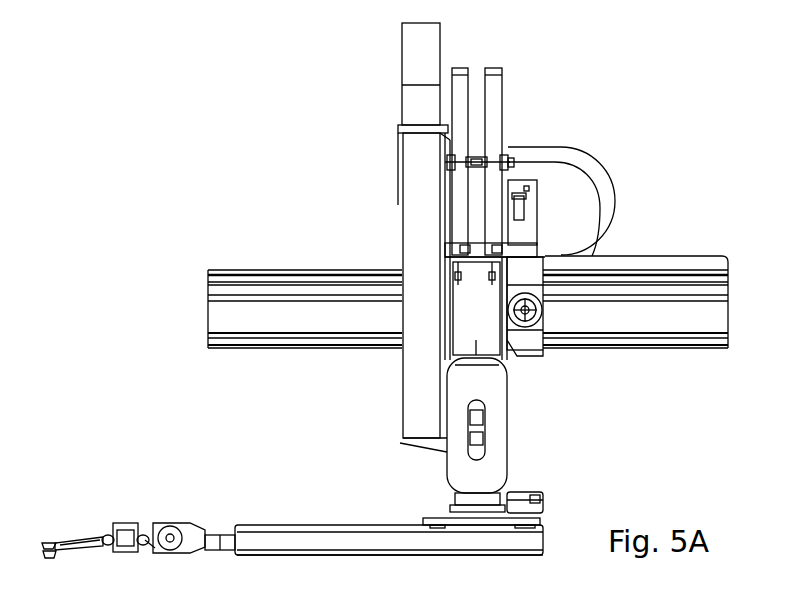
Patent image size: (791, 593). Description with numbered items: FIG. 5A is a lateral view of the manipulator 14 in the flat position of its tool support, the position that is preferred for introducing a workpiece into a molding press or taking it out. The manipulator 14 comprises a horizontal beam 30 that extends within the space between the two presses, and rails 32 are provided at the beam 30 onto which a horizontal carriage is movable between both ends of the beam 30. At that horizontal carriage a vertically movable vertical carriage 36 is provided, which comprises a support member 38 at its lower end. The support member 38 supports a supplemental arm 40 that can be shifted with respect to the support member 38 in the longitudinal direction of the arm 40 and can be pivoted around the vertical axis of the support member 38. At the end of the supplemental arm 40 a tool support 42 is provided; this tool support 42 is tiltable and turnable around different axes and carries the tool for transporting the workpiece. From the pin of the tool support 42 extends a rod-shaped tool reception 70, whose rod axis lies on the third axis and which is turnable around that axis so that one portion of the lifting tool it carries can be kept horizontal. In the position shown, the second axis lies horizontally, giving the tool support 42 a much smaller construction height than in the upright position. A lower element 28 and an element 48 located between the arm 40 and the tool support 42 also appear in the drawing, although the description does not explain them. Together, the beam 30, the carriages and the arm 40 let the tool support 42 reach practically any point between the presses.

The manipulator 14 is at (330, 207).
The base 28 is at (390, 574).
The horizontal beam 30 is at (209, 318).
The rails 32 is at (235, 282).
The vertical carriage 36 is at (497, 425).
The support member 38 is at (430, 518).
The supplemental arm 40 is at (300, 540).
The tool support 42 is at (146, 527).
The rotary unit 48 is at (222, 533).
The tool reception 70 is at (108, 535).